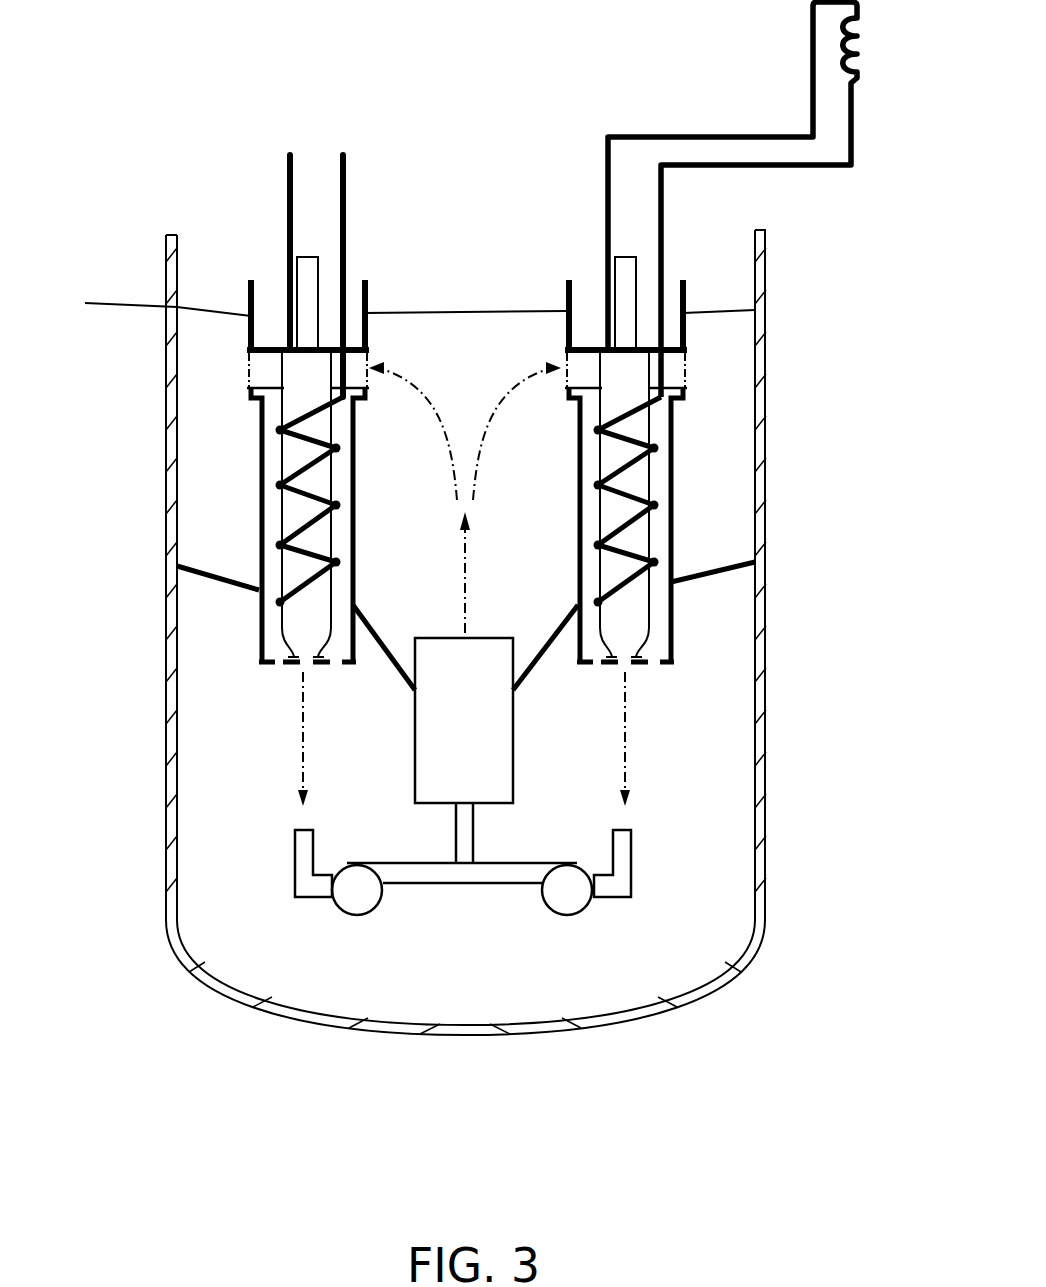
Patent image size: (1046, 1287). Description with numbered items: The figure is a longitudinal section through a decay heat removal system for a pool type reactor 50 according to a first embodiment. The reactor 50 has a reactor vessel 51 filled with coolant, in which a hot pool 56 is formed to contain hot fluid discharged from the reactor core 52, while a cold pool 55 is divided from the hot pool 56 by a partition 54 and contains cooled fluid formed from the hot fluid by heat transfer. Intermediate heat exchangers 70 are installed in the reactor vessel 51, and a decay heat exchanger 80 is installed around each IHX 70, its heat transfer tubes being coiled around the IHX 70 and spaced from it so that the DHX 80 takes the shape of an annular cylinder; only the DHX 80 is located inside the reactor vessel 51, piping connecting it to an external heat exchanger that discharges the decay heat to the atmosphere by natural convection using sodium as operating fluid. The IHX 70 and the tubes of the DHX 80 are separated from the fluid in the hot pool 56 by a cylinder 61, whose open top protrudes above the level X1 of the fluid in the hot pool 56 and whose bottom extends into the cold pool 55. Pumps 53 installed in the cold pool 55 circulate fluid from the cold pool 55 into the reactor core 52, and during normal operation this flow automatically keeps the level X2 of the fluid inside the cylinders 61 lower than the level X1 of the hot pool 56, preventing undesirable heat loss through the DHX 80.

The pool type reactor 50 is at (483, 100).
The reactor vessel 51 is at (765, 775).
The reactor core 52 is at (500, 745).
The pumps 53 is at (592, 895).
The partition 54 is at (717, 577).
The cold pool 55 is at (218, 807).
The hot pool 56 is at (210, 443).
The cylinder 61 is at (673, 420).
The intermediate heat exchanger 70 is at (633, 370).
The decay heat exchanger 80 is at (673, 508).
The level of the fluid in the hot pool X1 is at (401, 300).
The level of the fluid in the cylinders X2 is at (300, 602).